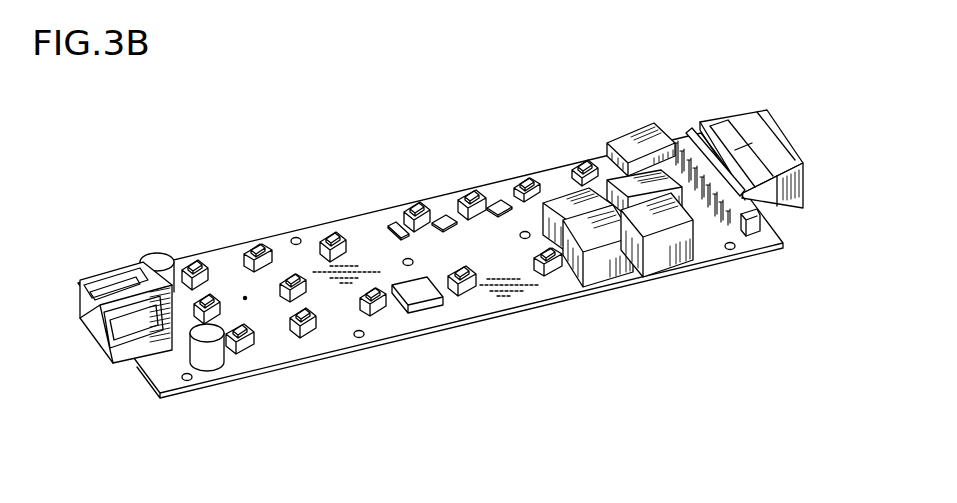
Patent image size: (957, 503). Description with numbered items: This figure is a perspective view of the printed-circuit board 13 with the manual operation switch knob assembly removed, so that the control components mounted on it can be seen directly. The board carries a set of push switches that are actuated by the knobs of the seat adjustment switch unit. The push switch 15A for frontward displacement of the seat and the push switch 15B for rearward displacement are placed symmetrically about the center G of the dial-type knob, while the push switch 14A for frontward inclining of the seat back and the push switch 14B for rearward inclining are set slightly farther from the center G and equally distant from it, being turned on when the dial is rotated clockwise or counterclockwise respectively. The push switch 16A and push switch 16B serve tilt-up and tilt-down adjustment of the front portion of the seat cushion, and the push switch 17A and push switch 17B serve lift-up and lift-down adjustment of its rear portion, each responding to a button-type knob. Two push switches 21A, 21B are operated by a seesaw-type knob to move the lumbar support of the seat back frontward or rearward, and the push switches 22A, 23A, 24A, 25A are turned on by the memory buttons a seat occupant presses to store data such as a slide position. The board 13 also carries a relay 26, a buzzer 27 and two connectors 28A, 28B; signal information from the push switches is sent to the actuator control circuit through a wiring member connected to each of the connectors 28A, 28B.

The printed-circuit board 13 is at (762, 244).
The center of the dial-type manual operation switch knob G is at (245, 296).
The push switch 14A is at (377, 316).
The push switch 14B is at (334, 234).
The push switch 15A is at (295, 274).
The push switch 15B is at (213, 323).
The push switch 16A is at (258, 246).
The push switch 16B is at (302, 337).
The push switch 17A is at (194, 262).
The push switch 17B is at (243, 353).
The push switch 21A is at (549, 277).
The push switch 21B is at (466, 293).
The push switch 22A is at (584, 162).
The push switch 23A is at (528, 179).
The push switch 24A is at (472, 191).
The push switch 25A is at (416, 203).
The relay 26 is at (613, 270).
The buzzer 27 is at (422, 300).
The connector 28A is at (102, 337).
The connector 28B is at (738, 112).